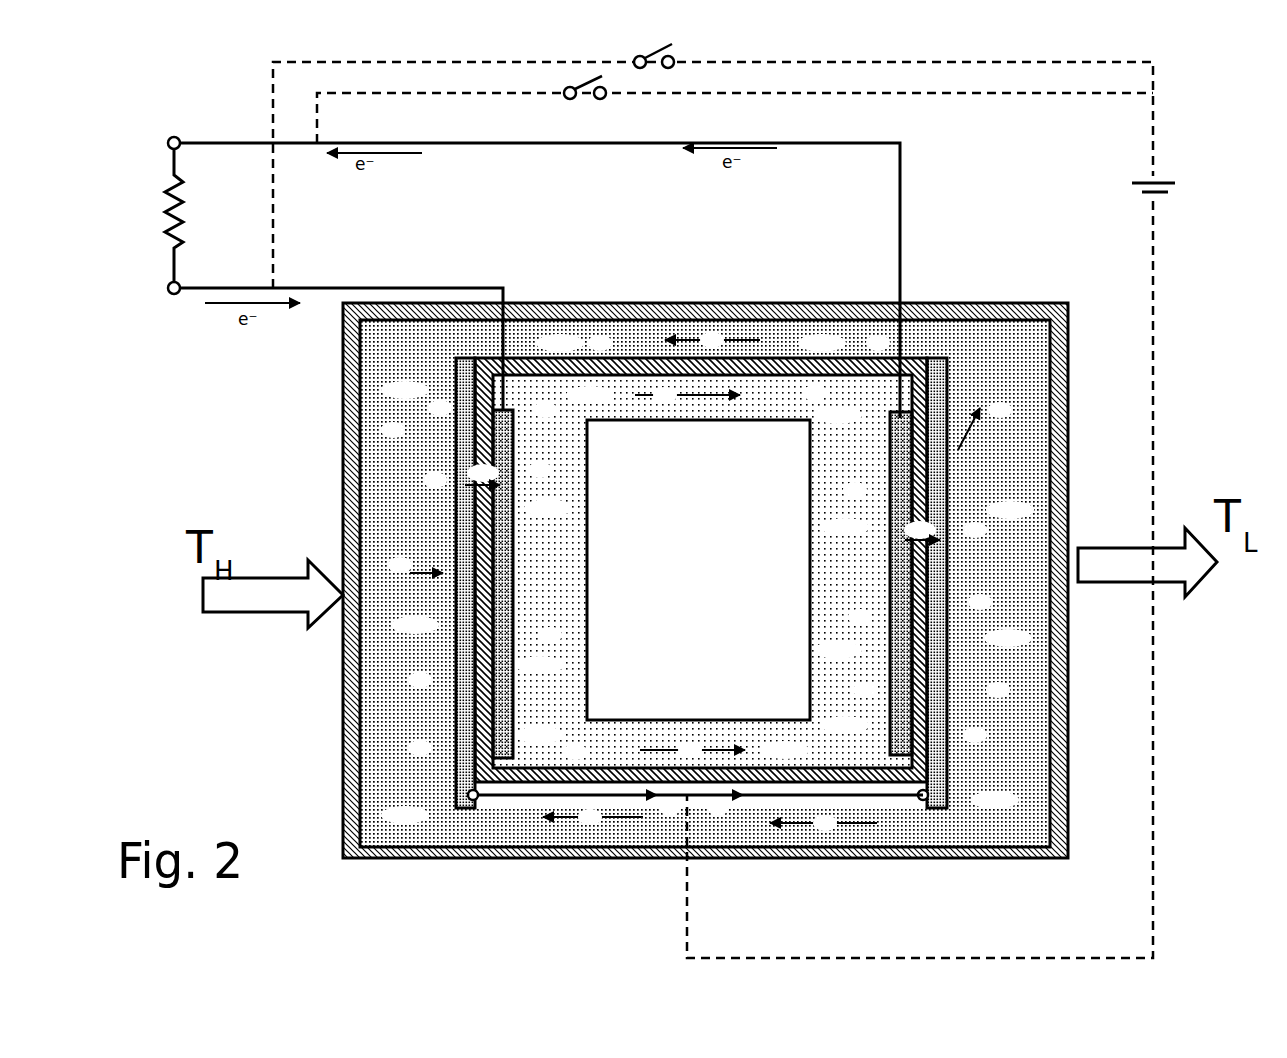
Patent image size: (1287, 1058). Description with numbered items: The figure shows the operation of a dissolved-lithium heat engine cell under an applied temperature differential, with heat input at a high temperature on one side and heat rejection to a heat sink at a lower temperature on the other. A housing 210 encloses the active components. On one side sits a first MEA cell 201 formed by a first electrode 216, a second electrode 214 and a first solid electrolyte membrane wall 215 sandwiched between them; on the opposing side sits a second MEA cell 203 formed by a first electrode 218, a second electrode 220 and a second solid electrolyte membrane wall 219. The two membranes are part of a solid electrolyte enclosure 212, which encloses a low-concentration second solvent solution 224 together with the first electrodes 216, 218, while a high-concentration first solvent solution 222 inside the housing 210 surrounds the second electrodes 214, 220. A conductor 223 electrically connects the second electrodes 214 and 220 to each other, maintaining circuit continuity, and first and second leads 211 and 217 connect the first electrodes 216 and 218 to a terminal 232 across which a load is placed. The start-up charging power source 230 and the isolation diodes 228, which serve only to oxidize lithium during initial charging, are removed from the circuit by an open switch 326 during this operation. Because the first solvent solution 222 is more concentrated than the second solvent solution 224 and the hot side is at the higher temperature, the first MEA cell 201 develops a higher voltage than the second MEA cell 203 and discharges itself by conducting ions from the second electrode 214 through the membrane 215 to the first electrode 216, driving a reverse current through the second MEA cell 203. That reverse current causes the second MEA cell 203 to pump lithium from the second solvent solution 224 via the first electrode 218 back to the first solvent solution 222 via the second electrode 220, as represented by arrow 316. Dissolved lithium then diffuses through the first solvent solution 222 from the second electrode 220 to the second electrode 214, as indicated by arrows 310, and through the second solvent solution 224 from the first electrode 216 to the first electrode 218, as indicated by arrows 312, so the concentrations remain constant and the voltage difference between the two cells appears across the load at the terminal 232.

The first MEA cell 201 is at (473, 343).
The second MEA cell 203 is at (920, 345).
The housing 210 is at (343, 393).
The first lead 211 is at (432, 288).
The solid electrolyte enclosure 212 is at (553, 782).
The second electrode 214 is at (468, 805).
The first solid electrolyte membrane wall 215 is at (475, 718).
The first electrode 216 is at (490, 783).
The second lead 217 is at (900, 210).
The first electrode 218 is at (903, 785).
The second solid electrolyte membrane wall 219 is at (925, 650).
The second electrode 220 is at (942, 810).
The first solvent solution 222 is at (397, 547).
The conductor 223 is at (785, 796).
The second solvent solution 224 is at (550, 610).
The isolation diodes 228 is at (252, 82).
The start-up charging power source 230 is at (1150, 197).
The terminal 232 is at (172, 294).
The arrows 310 is at (735, 335).
The arrows 312 is at (515, 583).
The arrow 316 is at (940, 537).
The switch 326 is at (606, 95).